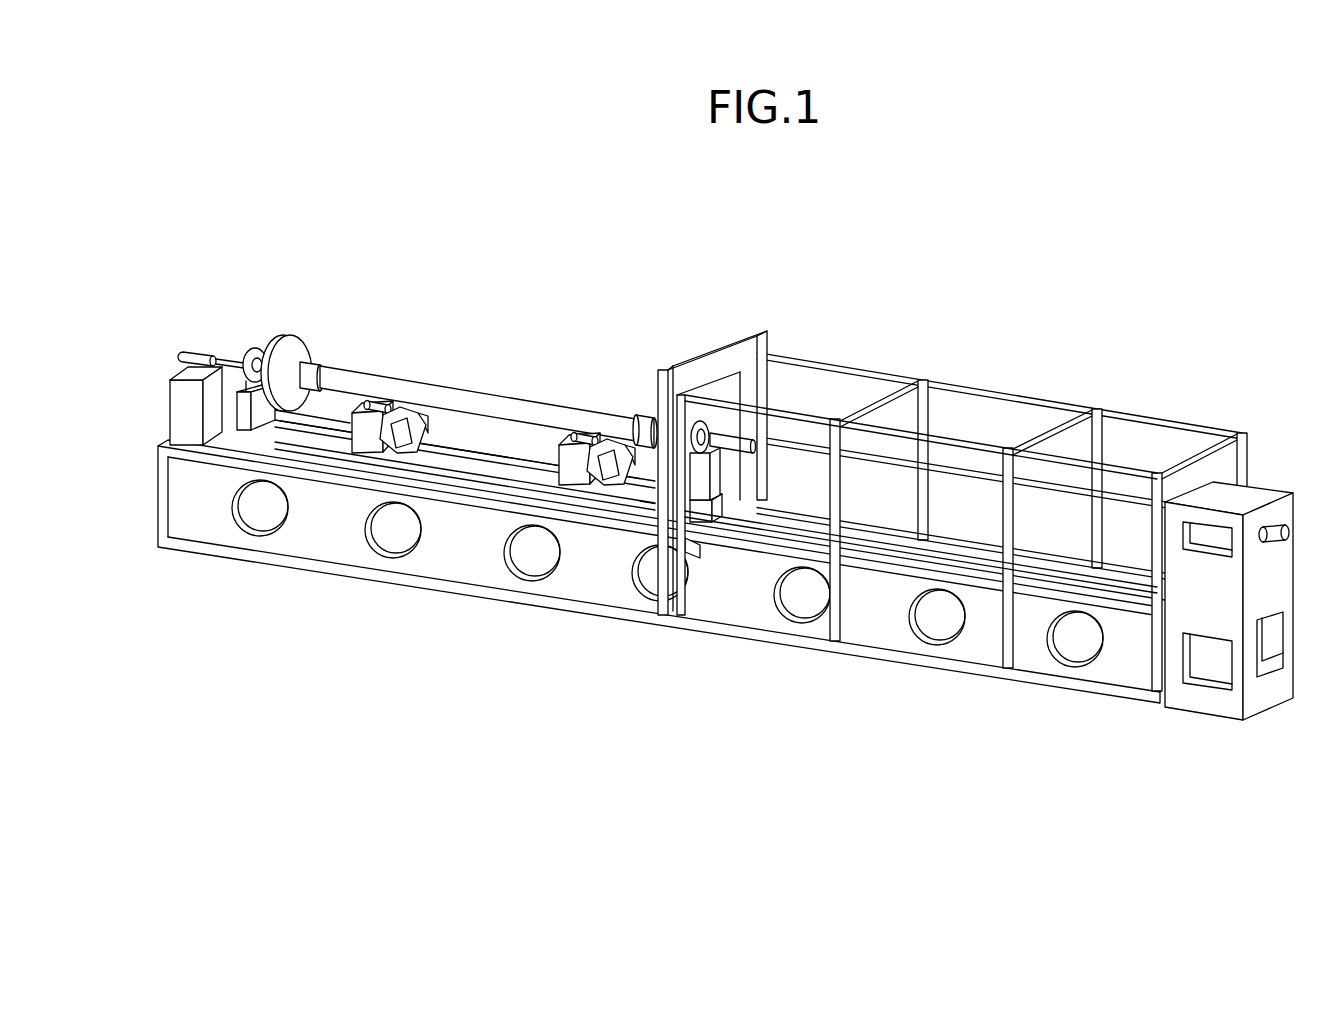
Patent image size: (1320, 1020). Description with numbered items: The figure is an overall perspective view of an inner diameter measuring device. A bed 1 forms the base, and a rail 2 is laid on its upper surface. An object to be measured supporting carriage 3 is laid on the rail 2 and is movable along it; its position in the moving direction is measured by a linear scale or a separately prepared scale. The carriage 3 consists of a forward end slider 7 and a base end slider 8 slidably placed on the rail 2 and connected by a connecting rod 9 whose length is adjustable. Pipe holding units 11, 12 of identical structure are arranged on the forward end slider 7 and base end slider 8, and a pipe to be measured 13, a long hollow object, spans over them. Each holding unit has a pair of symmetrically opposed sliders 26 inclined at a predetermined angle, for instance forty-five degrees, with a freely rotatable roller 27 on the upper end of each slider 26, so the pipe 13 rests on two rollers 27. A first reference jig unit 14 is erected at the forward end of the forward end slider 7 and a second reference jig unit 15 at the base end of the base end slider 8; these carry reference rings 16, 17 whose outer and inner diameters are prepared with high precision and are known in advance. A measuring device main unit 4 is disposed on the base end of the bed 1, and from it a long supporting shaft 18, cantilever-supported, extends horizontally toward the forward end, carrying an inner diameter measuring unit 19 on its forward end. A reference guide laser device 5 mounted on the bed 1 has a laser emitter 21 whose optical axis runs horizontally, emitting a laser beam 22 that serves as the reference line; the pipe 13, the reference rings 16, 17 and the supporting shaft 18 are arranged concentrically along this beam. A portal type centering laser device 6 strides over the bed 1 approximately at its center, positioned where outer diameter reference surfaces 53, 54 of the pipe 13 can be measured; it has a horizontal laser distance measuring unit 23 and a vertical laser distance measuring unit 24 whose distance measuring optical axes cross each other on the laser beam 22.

The bed 1 is at (753, 640).
The rail 2 is at (945, 540).
The object to be measured supporting carriage 3 is at (470, 437).
The measuring device main unit 4 is at (1267, 487).
The reference guide laser device 5 is at (168, 395).
The portal type centering laser device 6 is at (747, 334).
The forward end slider 7 is at (317, 452).
The base end slider 8 is at (630, 503).
The connecting rod 9 is at (500, 443).
The pipe holding unit 11 is at (367, 463).
The pipe holding unit 12 is at (582, 505).
The pipe to be measured 13 is at (555, 397).
The first reference jig unit 14 is at (257, 333).
The second reference jig unit 15 is at (690, 392).
The reference ring 16 is at (211, 440).
The reference ring 17 is at (693, 415).
The supporting shaft 18 is at (957, 470).
The inner diameter measuring unit 19 is at (813, 367).
The laser emitter 21 is at (204, 350).
The laser beam 22 is at (210, 437).
The horizontal laser distance measuring unit 23 is at (634, 514).
The vertical laser distance measuring unit 24 is at (728, 428).
The slider 26 is at (363, 460).
The roller 27 is at (383, 400).
The outer diameter reference surface 53 is at (330, 357).
The outer diameter reference surface 54 is at (650, 405).